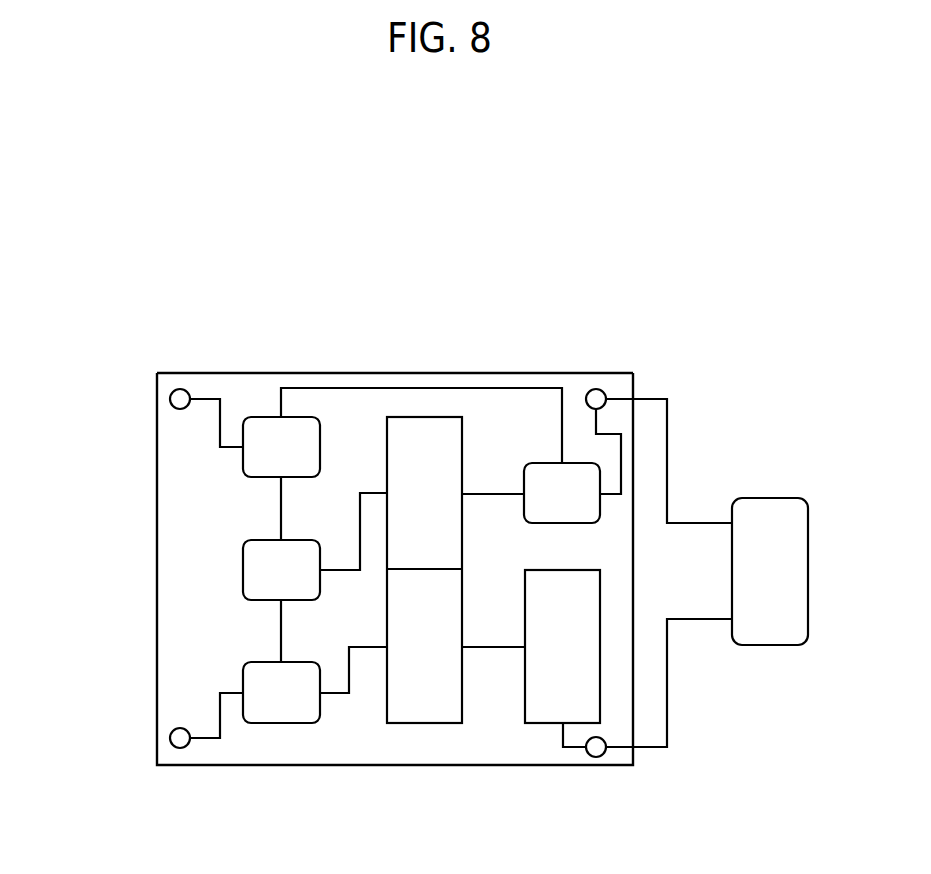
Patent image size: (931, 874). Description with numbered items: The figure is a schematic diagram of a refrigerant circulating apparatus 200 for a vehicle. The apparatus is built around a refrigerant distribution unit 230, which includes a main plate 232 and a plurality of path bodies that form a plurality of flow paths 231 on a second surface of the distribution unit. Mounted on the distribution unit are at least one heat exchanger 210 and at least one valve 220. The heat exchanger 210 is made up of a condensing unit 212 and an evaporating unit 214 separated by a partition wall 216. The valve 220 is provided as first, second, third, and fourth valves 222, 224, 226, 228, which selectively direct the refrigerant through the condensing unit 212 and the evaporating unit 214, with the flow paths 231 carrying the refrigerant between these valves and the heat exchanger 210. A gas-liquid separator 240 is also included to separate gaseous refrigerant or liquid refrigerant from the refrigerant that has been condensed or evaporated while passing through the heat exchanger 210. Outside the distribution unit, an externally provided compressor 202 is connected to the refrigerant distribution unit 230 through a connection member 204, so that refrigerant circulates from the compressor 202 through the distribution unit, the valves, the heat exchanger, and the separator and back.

The refrigerant circulating apparatus 200 is at (445, 195).
The compressor 202 is at (770, 498).
The connection member 204 is at (668, 455).
The heat exchanger 210 is at (492, 301).
The condensing unit 212 is at (425, 433).
The evaporating unit 214 is at (445, 601).
The partition wall 216 is at (375, 493).
The valve 220 is at (766, 210).
The first valve 222 is at (546, 463).
The second valve 224 is at (243, 468).
The third valve 226 is at (243, 570).
The fourth valve 228 is at (243, 672).
The refrigerant distribution unit 230 is at (346, 538).
The flow paths 231 is at (412, 569).
The main plate 232 is at (577, 373).
The gas-liquid separator 240 is at (541, 723).